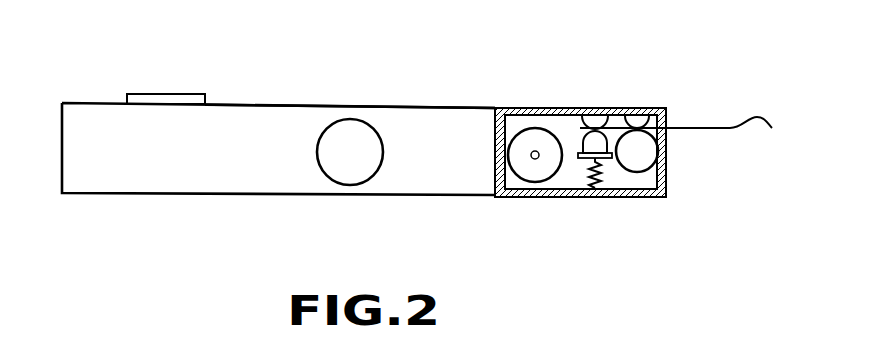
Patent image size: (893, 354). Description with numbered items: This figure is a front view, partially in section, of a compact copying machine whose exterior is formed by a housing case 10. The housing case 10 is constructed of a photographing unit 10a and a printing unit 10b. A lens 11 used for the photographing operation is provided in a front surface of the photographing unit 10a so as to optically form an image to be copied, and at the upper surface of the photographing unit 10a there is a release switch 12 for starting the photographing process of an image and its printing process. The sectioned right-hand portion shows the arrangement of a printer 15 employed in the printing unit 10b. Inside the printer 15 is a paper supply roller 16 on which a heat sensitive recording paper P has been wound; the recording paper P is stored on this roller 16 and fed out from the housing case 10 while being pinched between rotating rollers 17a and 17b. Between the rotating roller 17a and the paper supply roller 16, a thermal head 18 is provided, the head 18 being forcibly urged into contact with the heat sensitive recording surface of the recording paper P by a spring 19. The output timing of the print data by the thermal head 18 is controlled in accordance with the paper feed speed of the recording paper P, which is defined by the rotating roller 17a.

The housing case 10 is at (374, 78).
The photographing unit 10a is at (252, 103).
The printing unit 10b is at (515, 107).
The lens 11 is at (357, 178).
The release switch 12 is at (143, 92).
The printer 15 is at (653, 175).
The paper supply roller 16 is at (536, 159).
The rotating roller 17a is at (638, 158).
The rotating roller 17b is at (635, 122).
The thermal head 18 is at (597, 137).
The spring 19 is at (598, 175).
The heat sensitive recording paper P is at (730, 128).